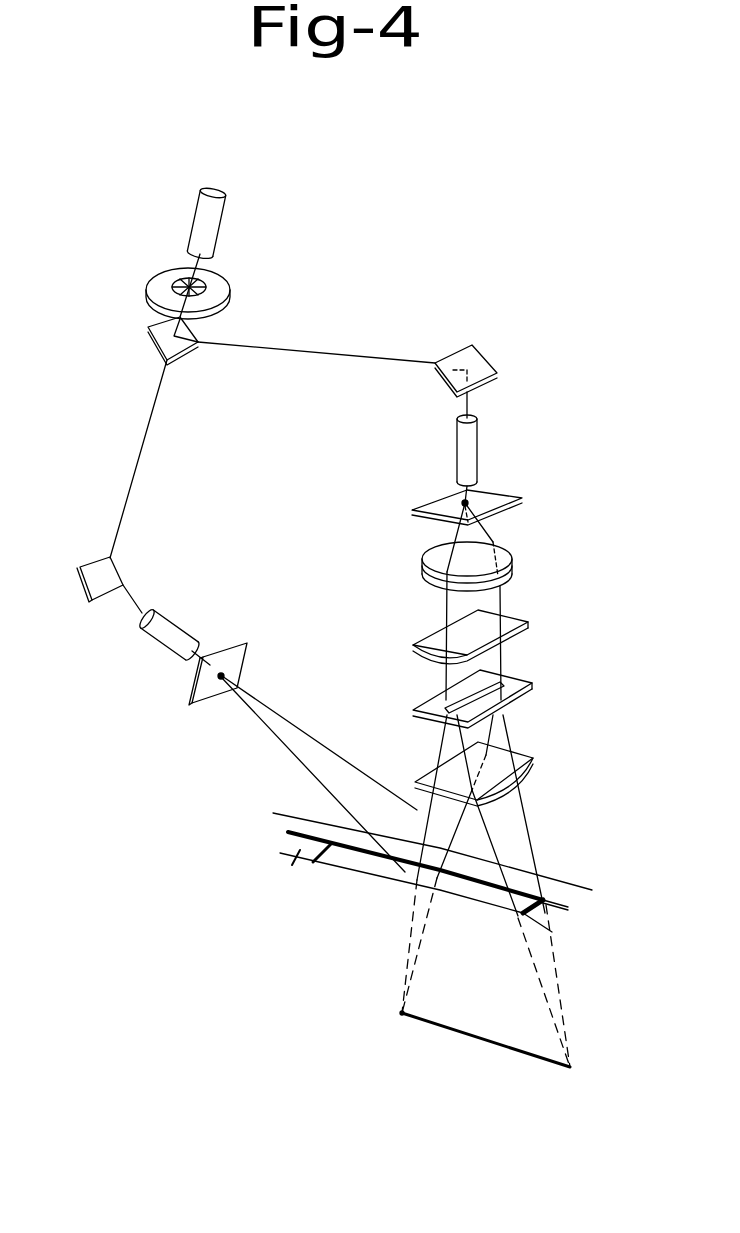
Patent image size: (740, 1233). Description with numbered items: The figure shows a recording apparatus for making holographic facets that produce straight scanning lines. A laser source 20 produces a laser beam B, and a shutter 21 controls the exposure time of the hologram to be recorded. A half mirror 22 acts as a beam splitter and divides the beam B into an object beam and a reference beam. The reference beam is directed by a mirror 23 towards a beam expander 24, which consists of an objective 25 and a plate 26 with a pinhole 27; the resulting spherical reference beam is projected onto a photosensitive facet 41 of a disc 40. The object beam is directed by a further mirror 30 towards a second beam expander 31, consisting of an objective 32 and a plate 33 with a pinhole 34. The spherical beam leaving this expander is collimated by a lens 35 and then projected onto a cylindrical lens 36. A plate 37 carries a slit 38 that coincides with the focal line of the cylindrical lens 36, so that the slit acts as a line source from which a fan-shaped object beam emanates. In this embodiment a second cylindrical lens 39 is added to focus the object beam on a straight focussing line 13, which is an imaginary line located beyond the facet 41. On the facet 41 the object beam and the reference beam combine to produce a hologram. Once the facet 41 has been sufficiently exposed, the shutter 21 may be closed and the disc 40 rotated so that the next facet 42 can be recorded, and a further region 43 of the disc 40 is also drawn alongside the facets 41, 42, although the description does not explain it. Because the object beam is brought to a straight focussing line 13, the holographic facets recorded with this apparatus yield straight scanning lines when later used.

The focussing line 13 is at (458, 1032).
The laser source 20 is at (210, 233).
The shutter 21 is at (217, 295).
The half mirror 22 is at (160, 337).
The mirror 23 is at (87, 585).
The beam expander 24 is at (214, 636).
The objective 25 is at (163, 640).
The plate 26 is at (207, 695).
The pinhole 27 is at (224, 676).
The mirror 30 is at (485, 370).
The beam expander 31 is at (492, 476).
The objective 32 is at (472, 443).
The plate 33 is at (503, 498).
The pinhole 34 is at (463, 502).
The lens 35 is at (505, 568).
The cylindrical lens 36 is at (512, 620).
The plate 37 is at (522, 678).
The slit 38 is at (468, 688).
The second cylindrical lens 39 is at (507, 758).
The disc 40 is at (563, 887).
The photosensitive facet 41 is at (492, 898).
The facet 42 is at (377, 866).
The glass plate 43 is at (303, 850).
The laser beam B is at (190, 265).